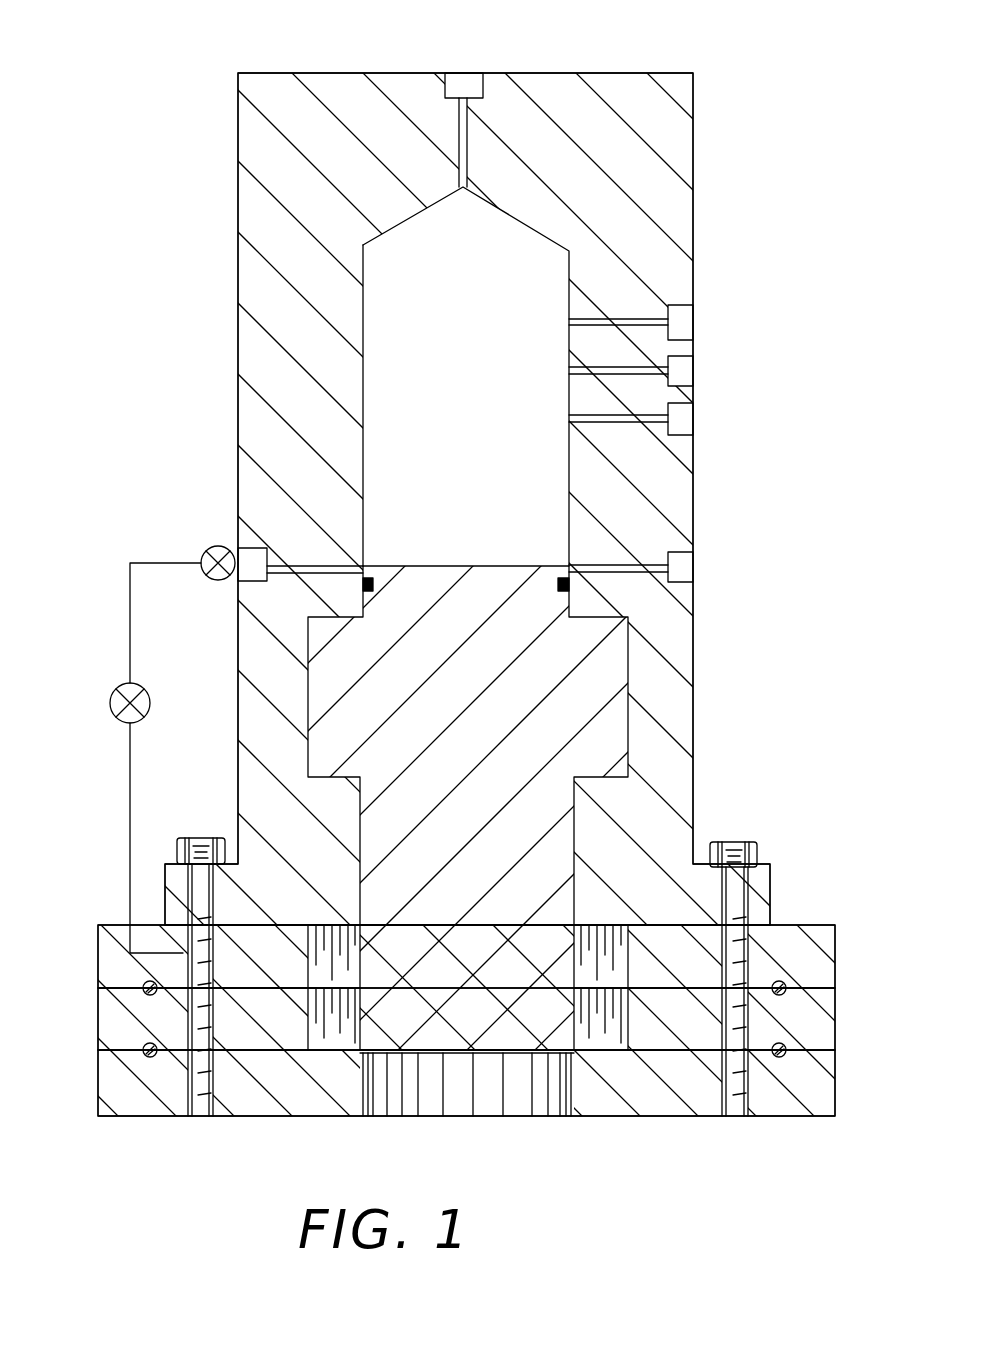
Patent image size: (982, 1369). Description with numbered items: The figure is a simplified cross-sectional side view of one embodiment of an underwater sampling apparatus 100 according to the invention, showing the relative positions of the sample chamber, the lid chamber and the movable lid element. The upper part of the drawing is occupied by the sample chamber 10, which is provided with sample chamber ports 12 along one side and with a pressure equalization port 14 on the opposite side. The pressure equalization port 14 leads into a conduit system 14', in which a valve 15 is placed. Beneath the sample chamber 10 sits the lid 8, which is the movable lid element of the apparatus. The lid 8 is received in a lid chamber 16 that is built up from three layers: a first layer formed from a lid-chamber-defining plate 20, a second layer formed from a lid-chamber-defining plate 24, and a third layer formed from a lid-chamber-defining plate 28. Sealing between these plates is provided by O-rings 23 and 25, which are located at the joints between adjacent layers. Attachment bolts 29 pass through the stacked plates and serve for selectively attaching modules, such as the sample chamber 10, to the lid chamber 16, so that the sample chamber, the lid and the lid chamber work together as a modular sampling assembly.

The underwater sampling apparatus 100 is at (578, 63).
The sample chamber 10 is at (738, 260).
The sample chamber ports 12 is at (705, 297).
The pressure equalization port 14 is at (268, 544).
The conduit system 14' is at (134, 758).
The valve 15 is at (112, 700).
The lid 8 is at (603, 753).
The lid chamber 16 is at (95, 1117).
The lid-chamber-defining plate 20 is at (812, 920).
The O-ring 23 is at (143, 993).
The lid-chamber-defining plate 24 is at (838, 1048).
The O-ring 25 is at (150, 1057).
The lid-chamber-defining plate 28 is at (760, 1120).
The attachment bolts 29 is at (203, 838).